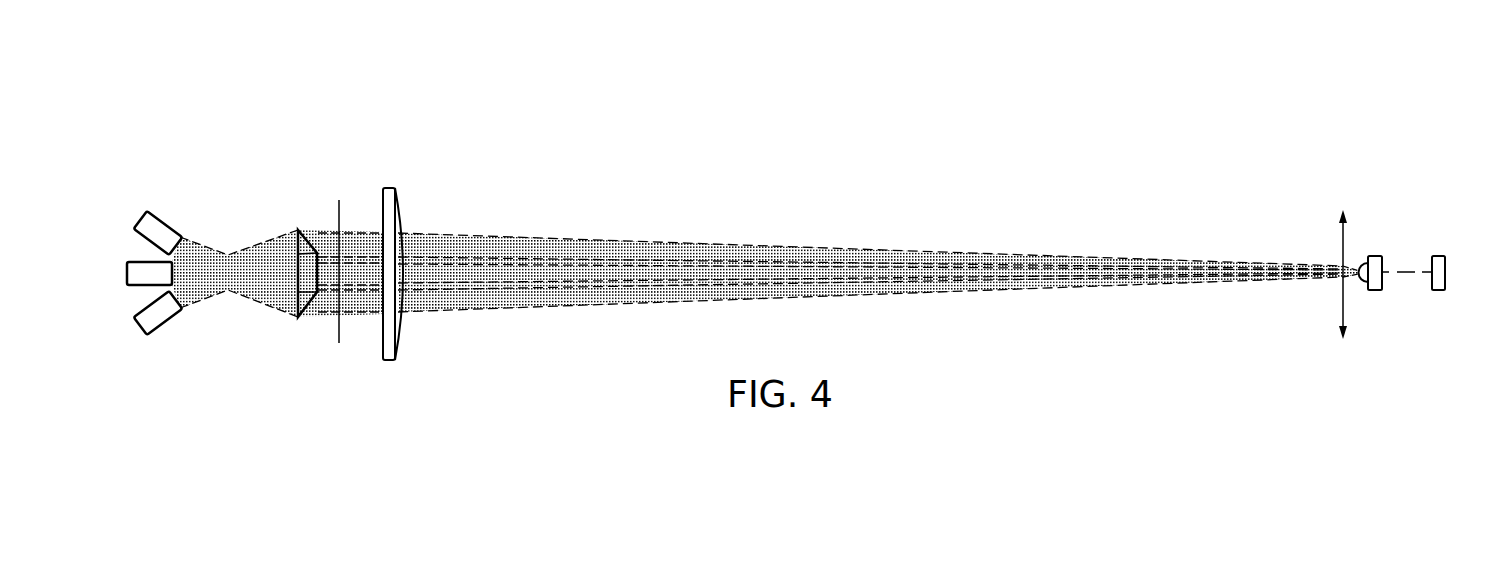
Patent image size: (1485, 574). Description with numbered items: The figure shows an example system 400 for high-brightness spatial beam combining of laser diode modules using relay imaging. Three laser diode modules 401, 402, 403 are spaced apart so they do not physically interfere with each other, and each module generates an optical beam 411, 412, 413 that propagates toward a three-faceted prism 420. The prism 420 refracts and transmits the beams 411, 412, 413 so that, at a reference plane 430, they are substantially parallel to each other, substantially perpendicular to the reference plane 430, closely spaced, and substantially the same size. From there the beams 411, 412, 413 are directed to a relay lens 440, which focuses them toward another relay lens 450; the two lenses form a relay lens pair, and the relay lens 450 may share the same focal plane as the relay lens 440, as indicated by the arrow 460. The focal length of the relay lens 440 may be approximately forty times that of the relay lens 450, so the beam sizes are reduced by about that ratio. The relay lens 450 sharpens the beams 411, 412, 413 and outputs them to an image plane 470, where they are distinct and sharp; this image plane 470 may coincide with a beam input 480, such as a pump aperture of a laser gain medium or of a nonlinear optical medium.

The system 400 is at (940, 137).
The laser diode module 401 is at (168, 228).
The laser diode module 402 is at (127, 268).
The laser diode module 403 is at (134, 325).
The optical beam 411 is at (490, 310).
The optical beam 412 is at (550, 270).
The optical beam 413 is at (490, 237).
The three-faceted prism 420 is at (310, 303).
The reference plane 430 is at (341, 330).
The relay lens 440 is at (386, 187).
The relay lens 450 is at (1375, 255).
The arrow 460 is at (1340, 298).
The image plane 470 is at (1428, 283).
The beam input 480 is at (1438, 255).